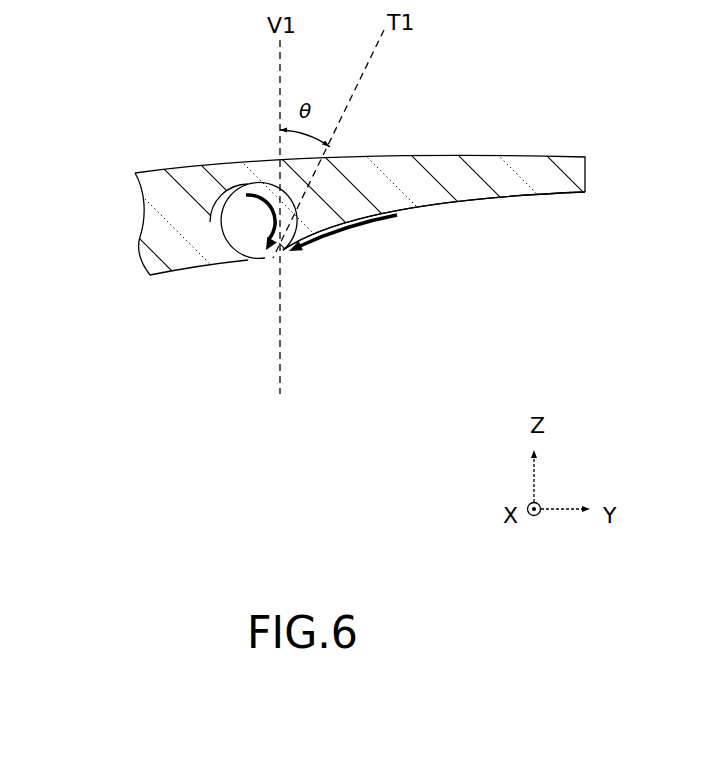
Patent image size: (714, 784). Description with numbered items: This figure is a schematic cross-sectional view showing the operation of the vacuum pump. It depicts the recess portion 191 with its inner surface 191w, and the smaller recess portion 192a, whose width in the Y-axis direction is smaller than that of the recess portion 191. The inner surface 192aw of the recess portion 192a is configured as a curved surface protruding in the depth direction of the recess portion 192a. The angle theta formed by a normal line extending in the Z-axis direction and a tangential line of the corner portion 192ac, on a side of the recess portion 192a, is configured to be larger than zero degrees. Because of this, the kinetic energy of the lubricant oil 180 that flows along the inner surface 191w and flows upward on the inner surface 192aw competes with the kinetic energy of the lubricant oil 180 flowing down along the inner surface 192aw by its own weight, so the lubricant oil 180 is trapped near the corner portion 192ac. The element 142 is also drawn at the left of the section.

The base member 142 is at (157, 238).
The lubricant oil 180 is at (343, 247).
The recess portion 191 is at (507, 217).
The inner surface 191w is at (448, 204).
The recess portion 192a is at (236, 232).
The inner surface 192aw is at (228, 198).
The corner portion 192ac is at (288, 224).